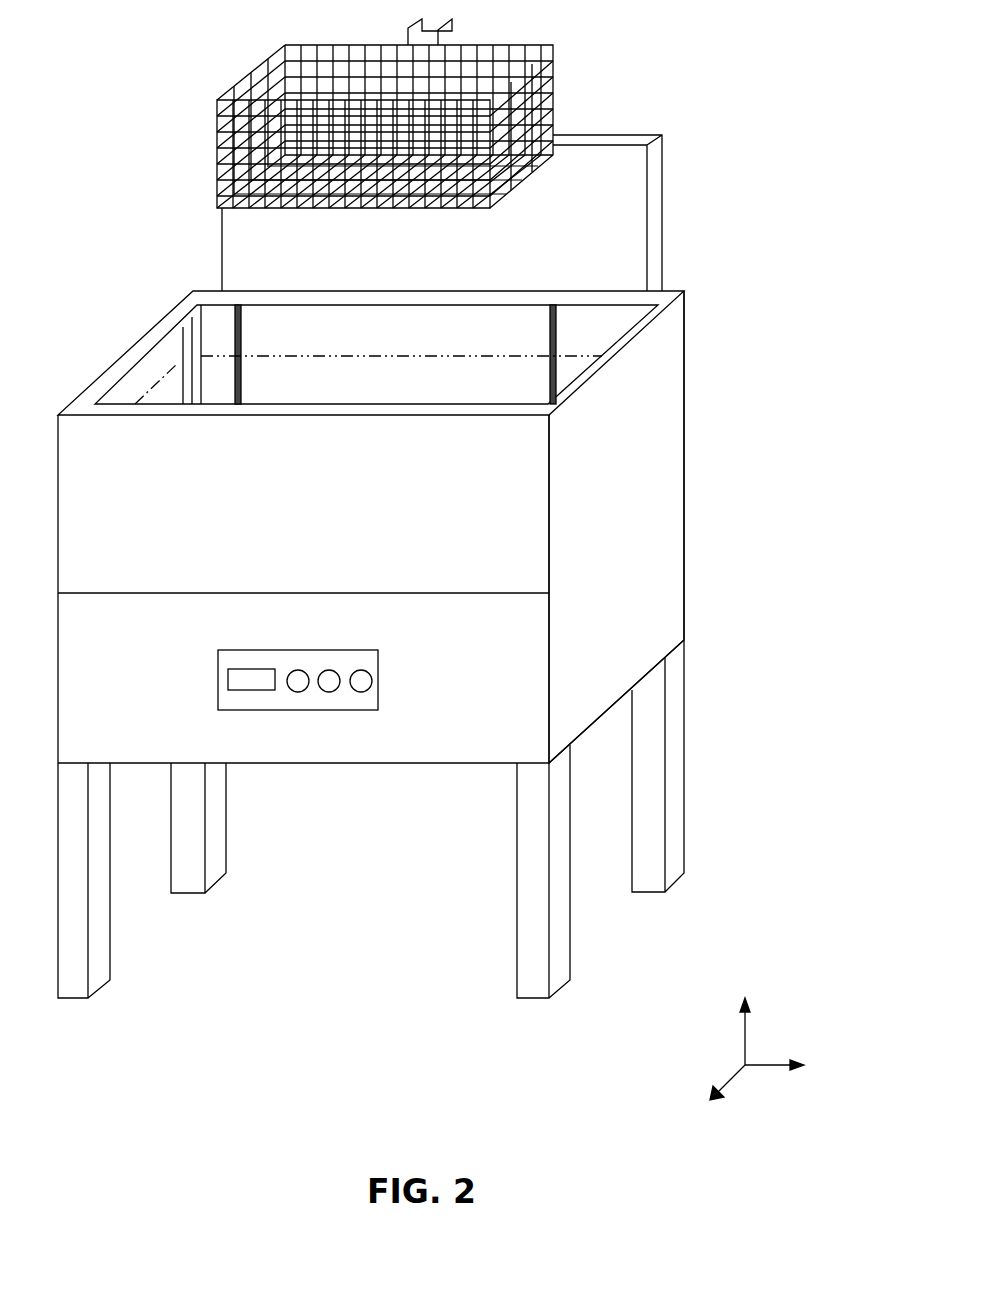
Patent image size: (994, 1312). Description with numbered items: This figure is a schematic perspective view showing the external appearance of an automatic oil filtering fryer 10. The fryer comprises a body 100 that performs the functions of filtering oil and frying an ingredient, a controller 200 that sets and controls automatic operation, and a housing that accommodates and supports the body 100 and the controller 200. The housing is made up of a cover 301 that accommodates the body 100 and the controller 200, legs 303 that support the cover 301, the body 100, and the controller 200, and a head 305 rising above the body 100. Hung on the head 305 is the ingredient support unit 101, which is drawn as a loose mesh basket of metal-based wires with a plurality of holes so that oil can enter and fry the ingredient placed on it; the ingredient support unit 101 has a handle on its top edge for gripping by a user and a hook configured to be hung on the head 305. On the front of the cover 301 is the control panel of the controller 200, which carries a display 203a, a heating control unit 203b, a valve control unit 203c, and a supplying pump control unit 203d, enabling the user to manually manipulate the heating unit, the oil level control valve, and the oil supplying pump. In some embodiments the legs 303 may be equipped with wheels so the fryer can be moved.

The automatic oil filtering fryer 10 is at (755, 48).
The ingredient support unit 101 is at (215, 123).
The body 100 is at (607, 329).
The controller 200 is at (403, 657).
The display 203a is at (252, 682).
The heating control unit 203b is at (298, 681).
The valve control unit 203c is at (329, 681).
The supplying pump control unit 203d is at (361, 681).
The cover 301 is at (660, 622).
The legs 303 is at (672, 809).
The head 305 is at (632, 222).